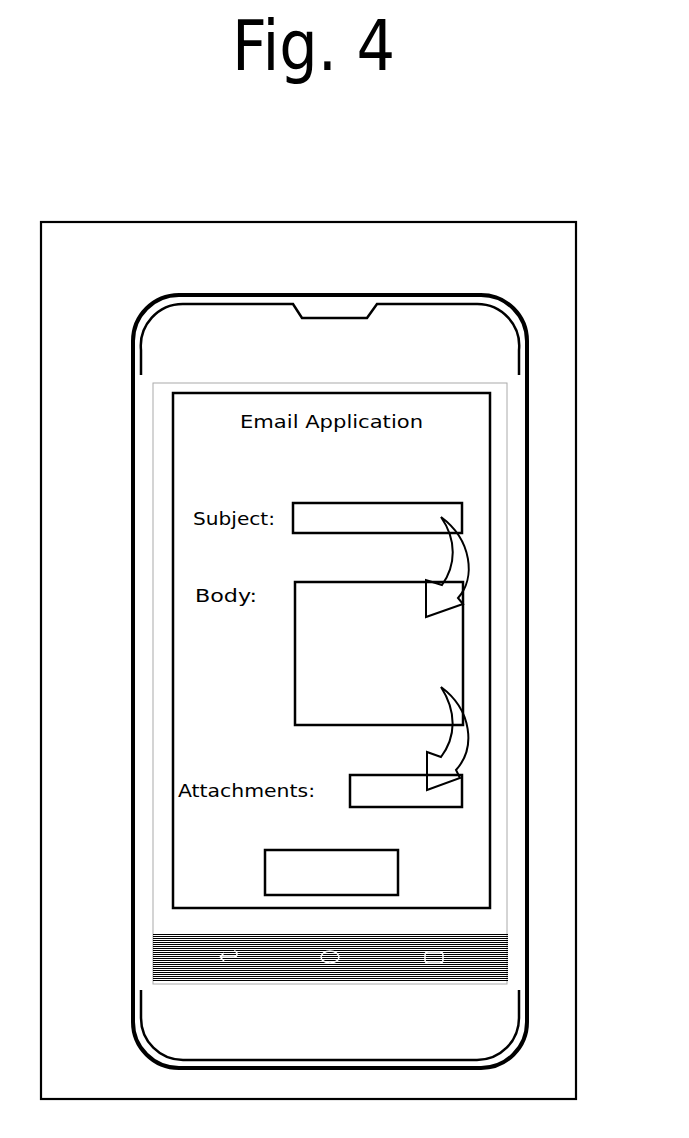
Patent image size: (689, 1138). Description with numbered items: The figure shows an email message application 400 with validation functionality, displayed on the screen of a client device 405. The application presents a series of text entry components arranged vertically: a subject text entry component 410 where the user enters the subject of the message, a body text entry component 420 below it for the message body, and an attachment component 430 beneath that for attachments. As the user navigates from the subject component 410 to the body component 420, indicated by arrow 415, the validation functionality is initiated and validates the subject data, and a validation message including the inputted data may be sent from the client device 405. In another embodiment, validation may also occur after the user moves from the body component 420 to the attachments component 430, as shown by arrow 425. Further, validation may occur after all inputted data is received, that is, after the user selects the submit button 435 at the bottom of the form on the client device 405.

The email message application 400 is at (181, 221).
The client device 405 is at (226, 296).
The subject text entry component 410 is at (388, 522).
The arrow 415 is at (460, 558).
The body text entry component 420 is at (392, 598).
The arrow 425 is at (462, 717).
The attachment component 430 is at (398, 790).
The submit button 435 is at (338, 858).